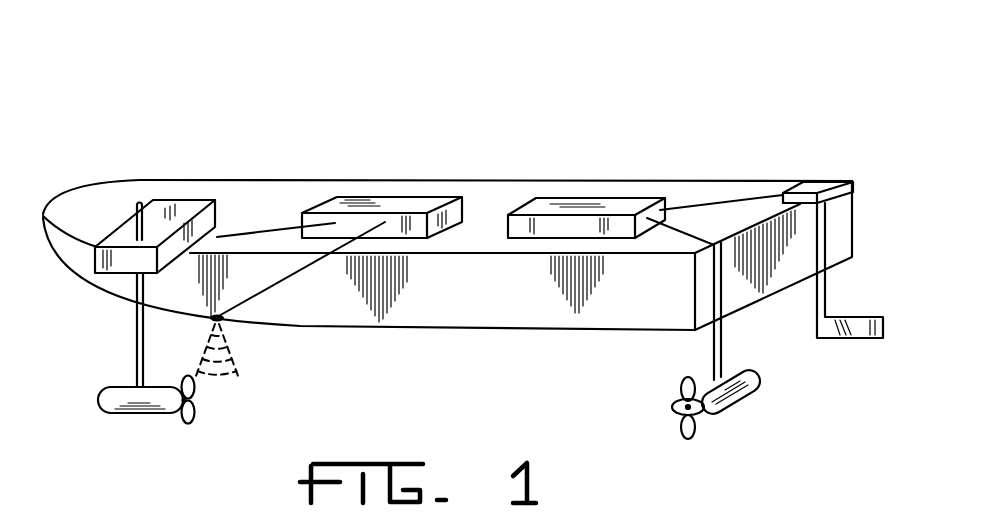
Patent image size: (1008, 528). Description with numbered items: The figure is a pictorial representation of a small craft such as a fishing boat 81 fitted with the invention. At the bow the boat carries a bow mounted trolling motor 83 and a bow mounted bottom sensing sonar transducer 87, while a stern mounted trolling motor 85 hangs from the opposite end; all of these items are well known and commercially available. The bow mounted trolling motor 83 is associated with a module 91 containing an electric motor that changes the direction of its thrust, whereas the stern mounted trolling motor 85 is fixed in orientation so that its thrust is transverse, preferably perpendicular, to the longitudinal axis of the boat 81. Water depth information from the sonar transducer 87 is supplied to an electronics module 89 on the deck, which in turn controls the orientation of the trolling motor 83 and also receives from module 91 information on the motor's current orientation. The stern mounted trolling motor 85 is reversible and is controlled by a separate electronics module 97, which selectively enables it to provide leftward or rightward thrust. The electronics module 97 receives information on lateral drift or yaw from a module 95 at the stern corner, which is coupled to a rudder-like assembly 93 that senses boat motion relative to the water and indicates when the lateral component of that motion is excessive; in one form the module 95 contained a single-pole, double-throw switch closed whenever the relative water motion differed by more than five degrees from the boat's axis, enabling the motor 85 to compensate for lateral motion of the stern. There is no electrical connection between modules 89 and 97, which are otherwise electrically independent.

The fishing boat 81 is at (503, 302).
The bow mounted trolling motor 83 is at (127, 403).
The stern mounted trolling motor 85 is at (743, 397).
The bottom sensing sonar transducer 87 is at (223, 320).
The electronics module 89 is at (370, 205).
The module 91 is at (123, 233).
The rudder-like assembly 93 is at (850, 330).
The module 95 is at (813, 183).
The electronics module 97 is at (593, 205).